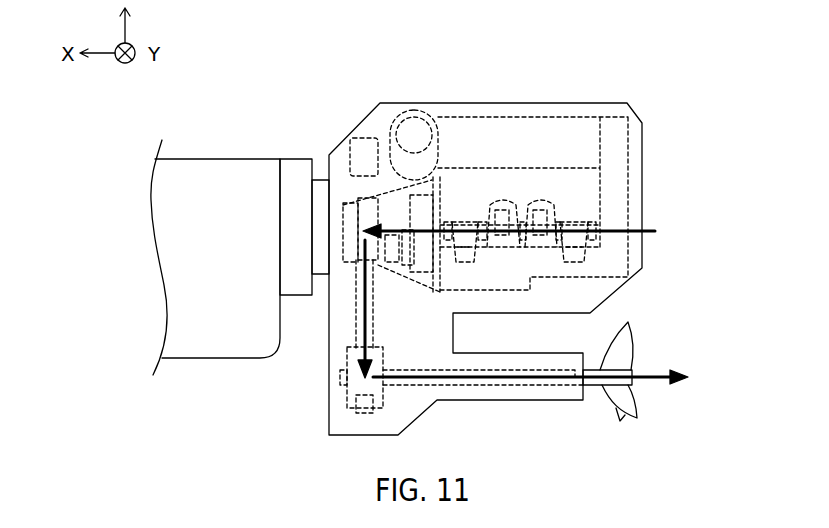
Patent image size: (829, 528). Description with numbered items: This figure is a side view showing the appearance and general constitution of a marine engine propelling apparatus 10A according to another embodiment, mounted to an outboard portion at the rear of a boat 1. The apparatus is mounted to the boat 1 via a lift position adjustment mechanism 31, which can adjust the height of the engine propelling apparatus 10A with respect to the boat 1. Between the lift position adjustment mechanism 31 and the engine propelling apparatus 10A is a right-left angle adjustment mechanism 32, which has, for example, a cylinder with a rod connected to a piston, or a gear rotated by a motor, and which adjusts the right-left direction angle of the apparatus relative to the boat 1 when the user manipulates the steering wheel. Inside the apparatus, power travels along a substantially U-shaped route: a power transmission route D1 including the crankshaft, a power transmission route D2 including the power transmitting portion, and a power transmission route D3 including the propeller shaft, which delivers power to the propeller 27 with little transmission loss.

The boat 1 is at (212, 152).
The lift position adjustment mechanism 31 is at (298, 150).
The right-left angle adjustment mechanism 32 is at (323, 171).
The engine propelling apparatus 10A is at (560, 88).
The propeller 27 is at (648, 351).
The power transmission route D1 is at (615, 225).
The power transmission route D2 is at (367, 318).
The power transmission route D3 is at (512, 383).